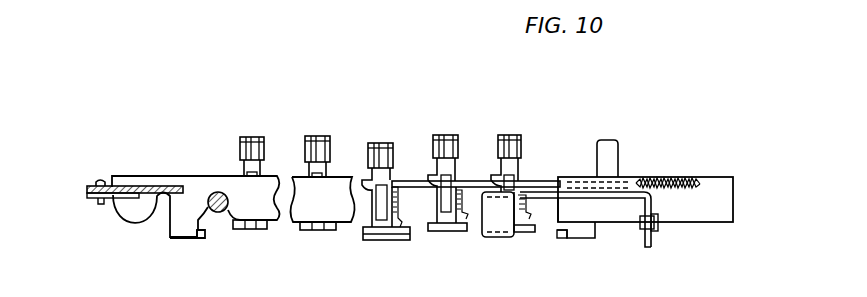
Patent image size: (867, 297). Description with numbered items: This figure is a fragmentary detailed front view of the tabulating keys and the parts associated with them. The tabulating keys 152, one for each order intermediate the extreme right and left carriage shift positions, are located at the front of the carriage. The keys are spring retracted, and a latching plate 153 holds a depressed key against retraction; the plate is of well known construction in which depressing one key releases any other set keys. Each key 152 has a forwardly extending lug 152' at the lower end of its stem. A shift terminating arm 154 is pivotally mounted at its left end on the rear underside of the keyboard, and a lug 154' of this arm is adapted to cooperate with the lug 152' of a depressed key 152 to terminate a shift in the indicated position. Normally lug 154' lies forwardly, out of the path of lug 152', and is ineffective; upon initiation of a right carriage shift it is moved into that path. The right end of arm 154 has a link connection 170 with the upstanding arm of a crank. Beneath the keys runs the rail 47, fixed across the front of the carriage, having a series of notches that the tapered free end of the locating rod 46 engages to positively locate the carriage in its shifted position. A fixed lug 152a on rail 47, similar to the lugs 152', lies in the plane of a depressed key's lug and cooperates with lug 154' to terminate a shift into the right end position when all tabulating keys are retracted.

The rail 47 is at (199, 191).
The shift terminating arm 154 is at (397, 197).
The locating rod 46 is at (225, 211).
The fixed lug 152a is at (188, 239).
The latching plate 153 is at (397, 179).
The tabulating key 152 is at (481, 165).
The lug 152' is at (382, 207).
The lug 154' is at (499, 234).
The link connection 170 is at (657, 235).